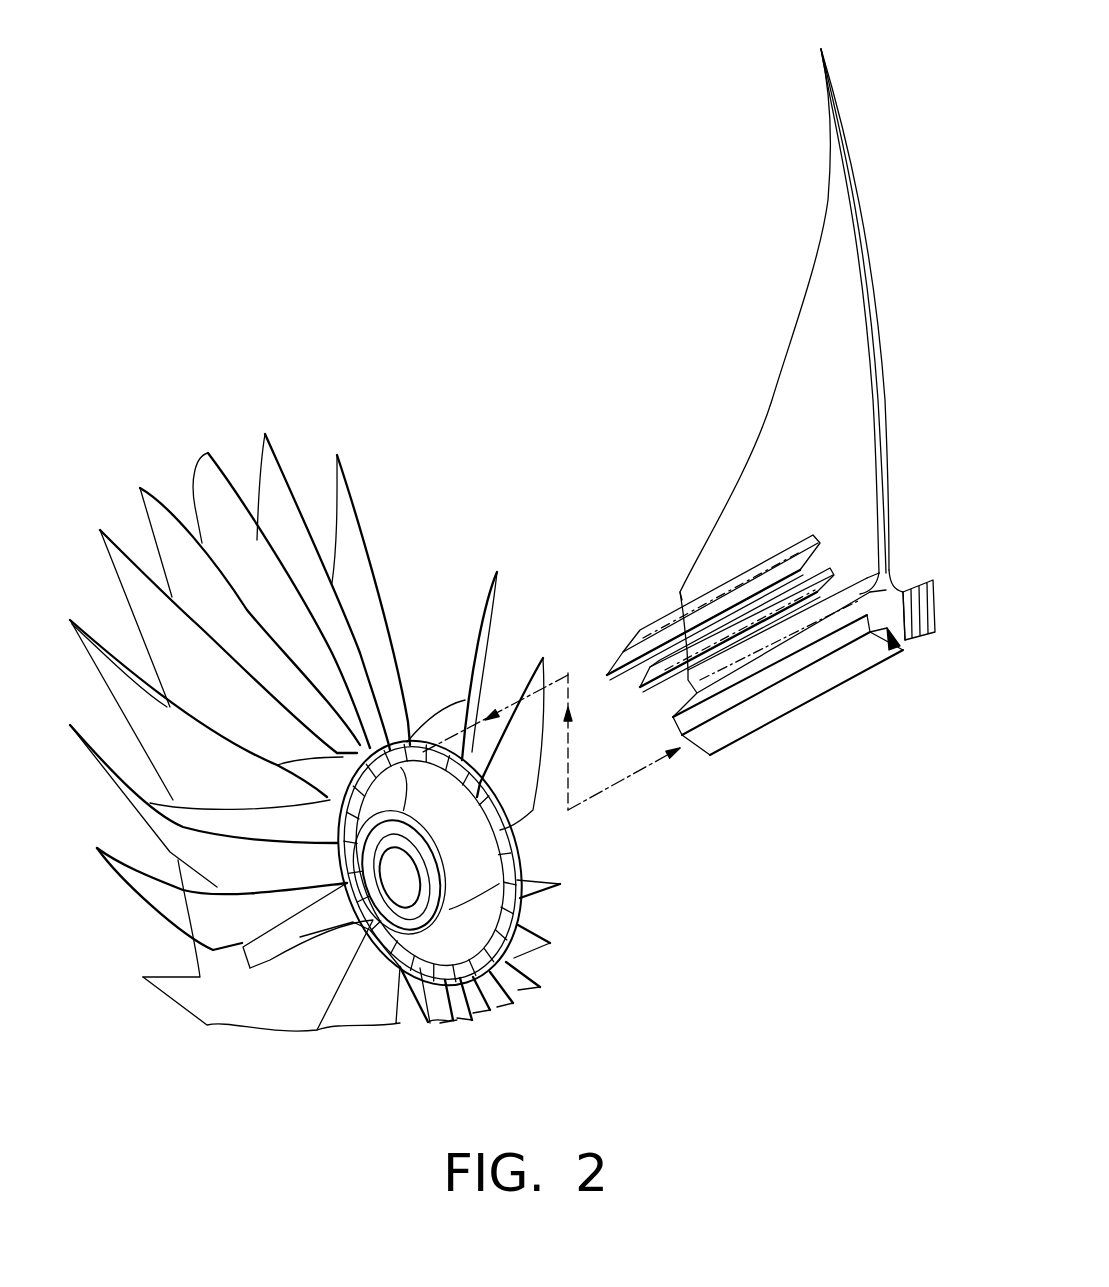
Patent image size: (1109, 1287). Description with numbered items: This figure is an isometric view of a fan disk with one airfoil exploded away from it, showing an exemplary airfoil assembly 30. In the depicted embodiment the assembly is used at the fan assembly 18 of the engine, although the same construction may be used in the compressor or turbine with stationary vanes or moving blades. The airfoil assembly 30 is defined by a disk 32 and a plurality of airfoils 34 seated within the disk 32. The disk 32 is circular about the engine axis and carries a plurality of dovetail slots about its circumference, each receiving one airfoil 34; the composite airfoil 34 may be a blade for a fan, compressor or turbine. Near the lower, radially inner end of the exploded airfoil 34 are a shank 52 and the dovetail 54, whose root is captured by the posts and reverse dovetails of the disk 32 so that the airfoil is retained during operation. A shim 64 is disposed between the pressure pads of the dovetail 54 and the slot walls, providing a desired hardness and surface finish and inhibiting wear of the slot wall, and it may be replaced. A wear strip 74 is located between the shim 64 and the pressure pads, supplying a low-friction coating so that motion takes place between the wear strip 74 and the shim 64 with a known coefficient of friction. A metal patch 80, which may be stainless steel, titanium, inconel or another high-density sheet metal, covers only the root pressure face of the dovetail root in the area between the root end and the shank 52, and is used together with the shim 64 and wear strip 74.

The airfoil assembly 30 is at (343, 112).
The fan assembly 18 is at (391, 266).
The disk 32 is at (513, 878).
The airfoil 34 is at (783, 327).
The shank 52 is at (853, 540).
The dovetail 54 is at (890, 635).
The shim 64 is at (633, 668).
The wear strip 74 is at (658, 690).
The metal patch 80 is at (847, 607).